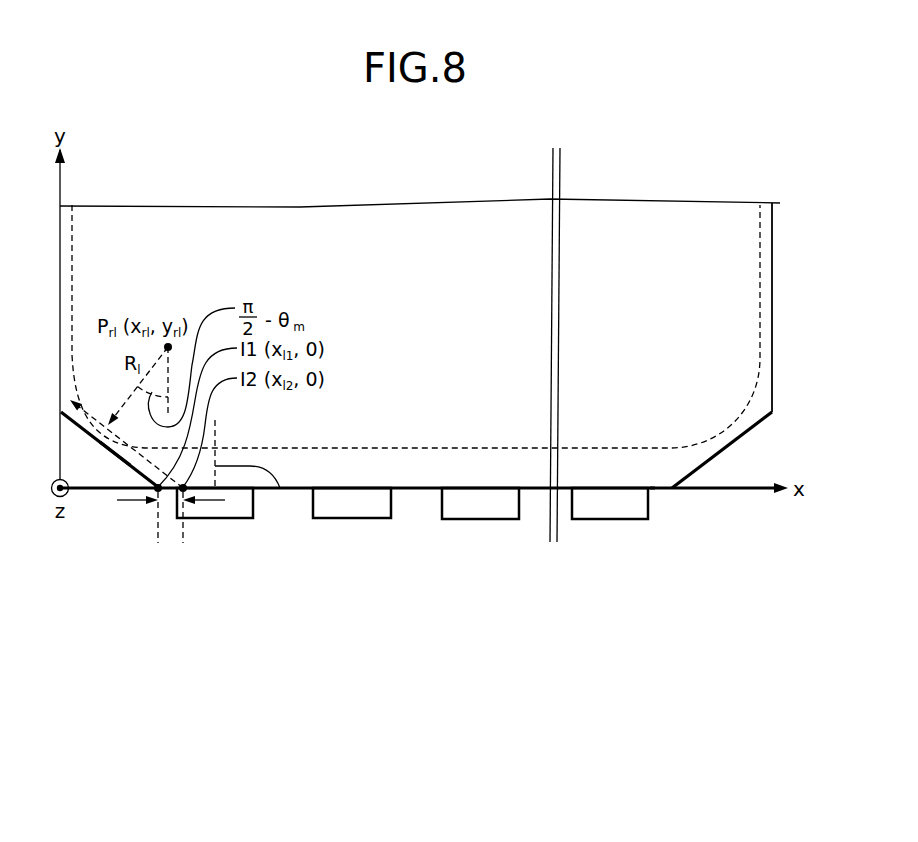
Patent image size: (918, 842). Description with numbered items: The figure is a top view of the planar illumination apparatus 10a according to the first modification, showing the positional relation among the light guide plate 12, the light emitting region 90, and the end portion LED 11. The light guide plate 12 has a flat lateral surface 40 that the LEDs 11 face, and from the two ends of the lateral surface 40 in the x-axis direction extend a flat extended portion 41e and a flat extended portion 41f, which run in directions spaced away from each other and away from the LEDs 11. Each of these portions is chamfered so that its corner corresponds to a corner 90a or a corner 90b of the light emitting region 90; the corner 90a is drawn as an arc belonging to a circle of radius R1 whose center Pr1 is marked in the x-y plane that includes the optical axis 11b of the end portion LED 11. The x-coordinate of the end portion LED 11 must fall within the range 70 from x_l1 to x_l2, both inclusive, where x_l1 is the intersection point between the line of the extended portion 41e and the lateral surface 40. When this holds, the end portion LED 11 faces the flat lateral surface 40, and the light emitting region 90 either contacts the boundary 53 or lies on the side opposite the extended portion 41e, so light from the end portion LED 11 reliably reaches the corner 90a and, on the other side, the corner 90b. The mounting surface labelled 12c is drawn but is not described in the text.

The light emitting region 90 is at (343, 240).
The planar illumination apparatus 10a is at (608, 176).
The extended portion 41e is at (93, 437).
The corner 90a is at (86, 424).
The boundary 53 is at (123, 461).
The range 70 is at (158, 503).
The LED 11 is at (227, 512).
The optical axis 11b is at (280, 490).
The lateral surface 40 is at (420, 490).
The light guide plate 12 is at (533, 478).
The extended portion 41f is at (722, 449).
The corner 90b is at (740, 426).
The mounting surface 12c is at (471, 653).